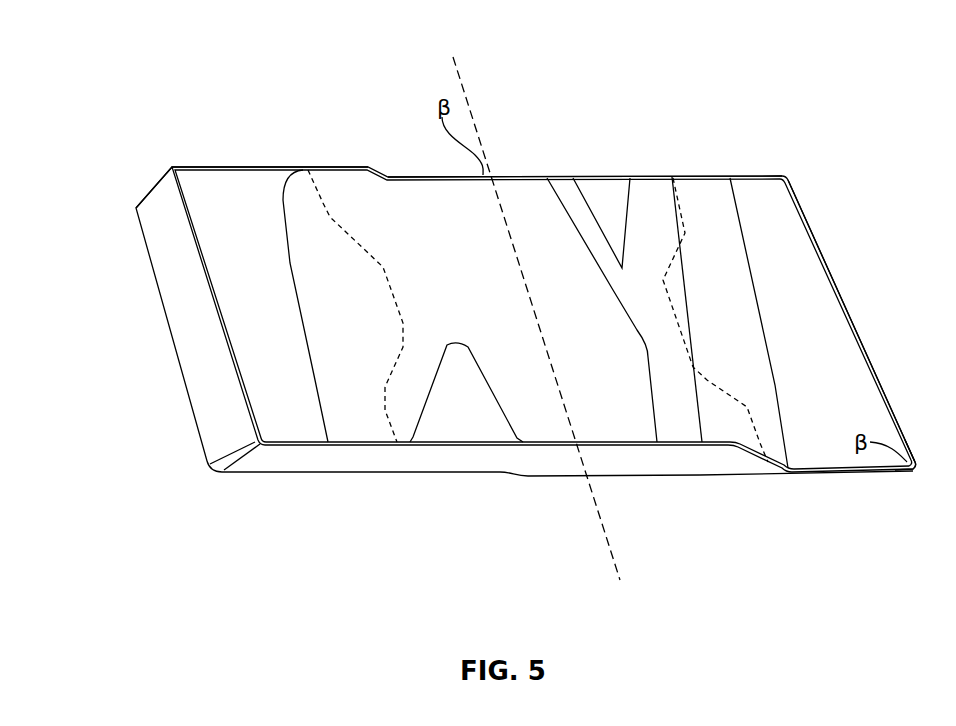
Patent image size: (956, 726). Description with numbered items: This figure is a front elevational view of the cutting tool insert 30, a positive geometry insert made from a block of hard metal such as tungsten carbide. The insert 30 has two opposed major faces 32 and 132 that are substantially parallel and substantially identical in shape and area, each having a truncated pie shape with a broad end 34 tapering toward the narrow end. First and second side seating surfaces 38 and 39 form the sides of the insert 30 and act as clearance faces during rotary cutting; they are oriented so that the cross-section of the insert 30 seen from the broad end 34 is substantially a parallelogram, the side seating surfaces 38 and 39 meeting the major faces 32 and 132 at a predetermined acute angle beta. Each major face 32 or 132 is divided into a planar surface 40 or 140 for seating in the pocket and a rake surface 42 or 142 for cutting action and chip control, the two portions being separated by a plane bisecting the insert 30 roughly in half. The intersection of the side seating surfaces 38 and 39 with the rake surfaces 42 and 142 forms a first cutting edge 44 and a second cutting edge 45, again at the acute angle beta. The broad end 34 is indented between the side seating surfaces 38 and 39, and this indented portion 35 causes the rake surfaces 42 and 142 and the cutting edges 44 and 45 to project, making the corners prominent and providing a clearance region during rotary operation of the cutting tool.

The cutting tool insert 30 is at (182, 72).
The opposed major face 32 is at (433, 175).
The broad end 34 is at (737, 262).
The indented portion 35 is at (302, 217).
The first side seating surface 38 is at (807, 215).
The second side seating surface 39 is at (172, 307).
The planar surface 40 is at (653, 175).
The rake surface 42 is at (257, 167).
The first cutting edge 44 is at (915, 477).
The second cutting edge 45 is at (153, 190).
The opposed major face 132 is at (527, 462).
The planar surface 140 is at (357, 460).
The rake surface 142 is at (732, 462).